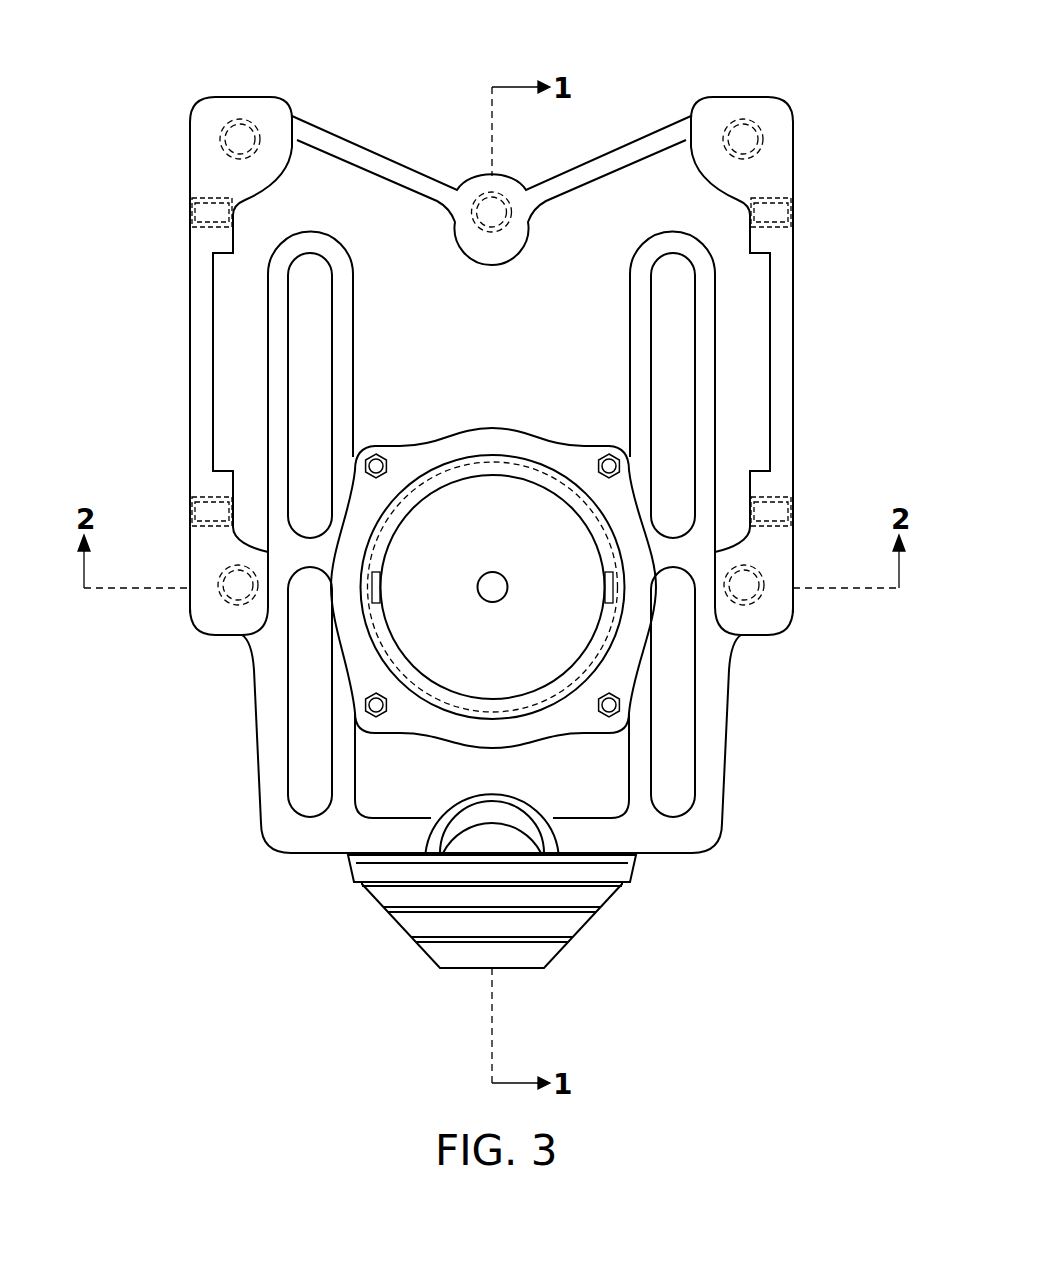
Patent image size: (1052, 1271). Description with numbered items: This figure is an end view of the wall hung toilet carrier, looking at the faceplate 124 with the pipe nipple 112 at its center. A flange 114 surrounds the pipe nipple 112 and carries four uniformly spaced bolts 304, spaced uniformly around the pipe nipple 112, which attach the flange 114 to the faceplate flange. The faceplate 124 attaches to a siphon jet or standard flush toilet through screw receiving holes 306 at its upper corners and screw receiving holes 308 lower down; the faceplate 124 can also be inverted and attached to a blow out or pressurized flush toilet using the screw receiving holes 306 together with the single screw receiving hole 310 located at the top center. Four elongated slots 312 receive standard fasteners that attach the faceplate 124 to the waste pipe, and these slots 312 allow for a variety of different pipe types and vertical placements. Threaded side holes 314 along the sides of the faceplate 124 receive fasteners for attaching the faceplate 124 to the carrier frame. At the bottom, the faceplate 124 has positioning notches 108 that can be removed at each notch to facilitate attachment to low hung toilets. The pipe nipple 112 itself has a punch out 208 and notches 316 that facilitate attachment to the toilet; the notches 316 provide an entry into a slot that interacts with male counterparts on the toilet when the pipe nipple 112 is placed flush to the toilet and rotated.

The faceplate 124 is at (253, 40).
The positioning notches 108 is at (570, 937).
The pipe nipple 112 is at (623, 622).
The flange 114 is at (553, 735).
The punch out 208 is at (378, 624).
The bolts 304 is at (365, 466).
The screw receiving holes 306 is at (238, 140).
The screw receiving holes 308 is at (238, 585).
The screw receiving holes 310 is at (492, 208).
The slots 312 is at (302, 388).
The threaded side holes 314 is at (210, 213).
The notches 316 is at (372, 588).